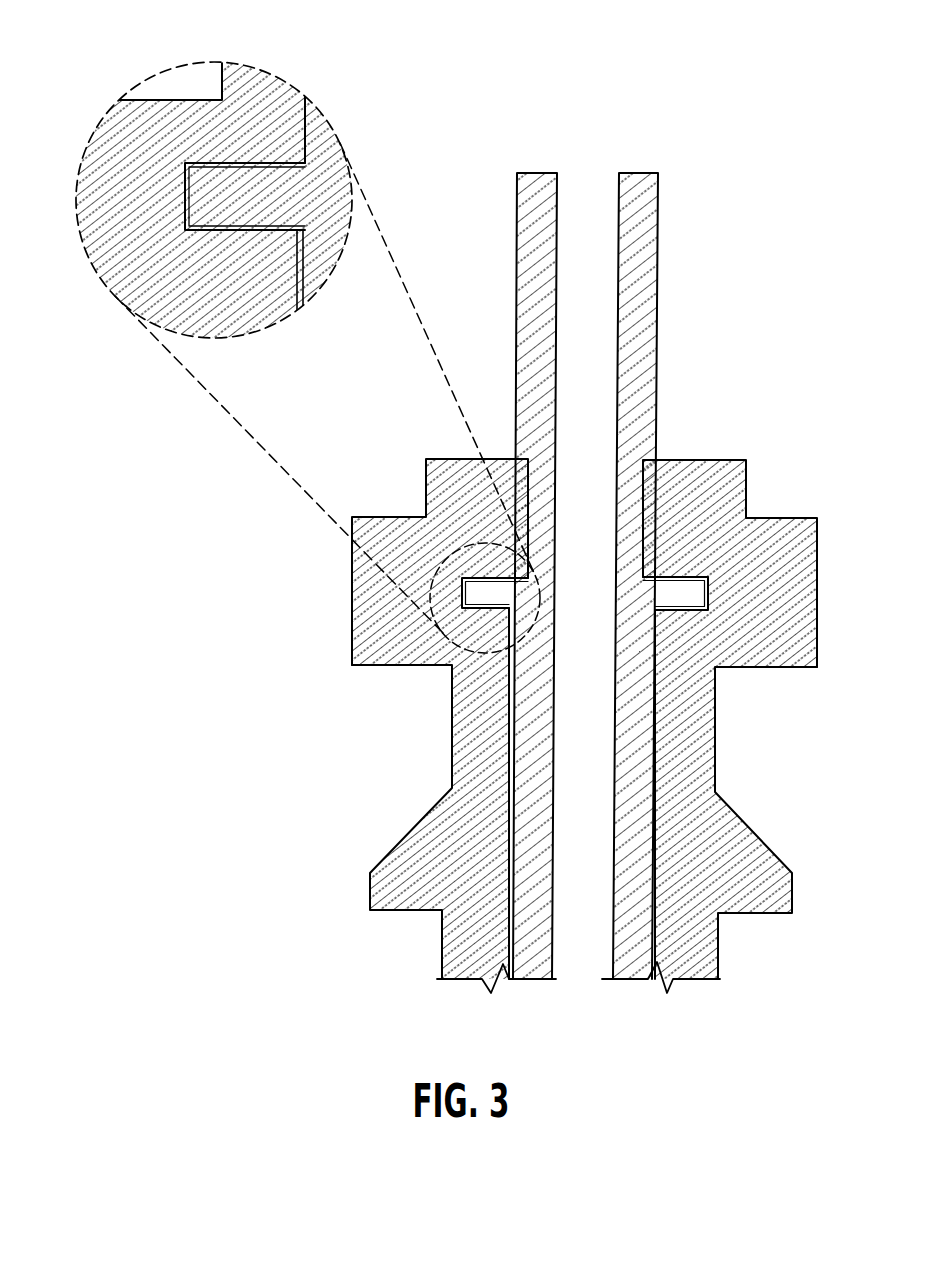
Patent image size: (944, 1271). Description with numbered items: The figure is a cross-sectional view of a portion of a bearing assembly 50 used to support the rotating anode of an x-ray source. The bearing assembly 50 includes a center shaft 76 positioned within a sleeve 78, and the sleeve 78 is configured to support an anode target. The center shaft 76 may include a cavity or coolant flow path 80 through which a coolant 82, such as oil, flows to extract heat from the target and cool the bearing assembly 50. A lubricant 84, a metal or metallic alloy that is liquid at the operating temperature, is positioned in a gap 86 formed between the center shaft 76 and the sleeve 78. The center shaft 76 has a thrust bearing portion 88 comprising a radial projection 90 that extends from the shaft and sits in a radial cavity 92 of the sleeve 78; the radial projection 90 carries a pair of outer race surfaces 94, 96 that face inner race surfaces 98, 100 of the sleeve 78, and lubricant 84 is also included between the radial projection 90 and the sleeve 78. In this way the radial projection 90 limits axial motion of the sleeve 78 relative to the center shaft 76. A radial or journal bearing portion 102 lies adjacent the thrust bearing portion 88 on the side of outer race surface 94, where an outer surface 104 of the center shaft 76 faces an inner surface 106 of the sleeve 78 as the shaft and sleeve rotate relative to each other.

The bearing assembly 50 is at (375, 740).
The center shaft 76 is at (517, 225).
The sleeve 78 is at (452, 458).
The coolant flow path 80 is at (593, 181).
The coolant 82 is at (571, 393).
The lubricant 84 is at (304, 255).
The gap 86 is at (509, 732).
The thrust bearing portion 88 is at (449, 596).
The radial projection 90 is at (460, 576).
The radial cavity 92 is at (262, 182).
The outer race surface 94 is at (185, 207).
The outer race surface 96 is at (310, 158).
The inner race surface 98 is at (200, 270).
The inner race surface 100 is at (252, 162).
The journal bearing portion 102 is at (497, 755).
The outer surface 104 is at (304, 294).
The inner surface 106 is at (294, 304).